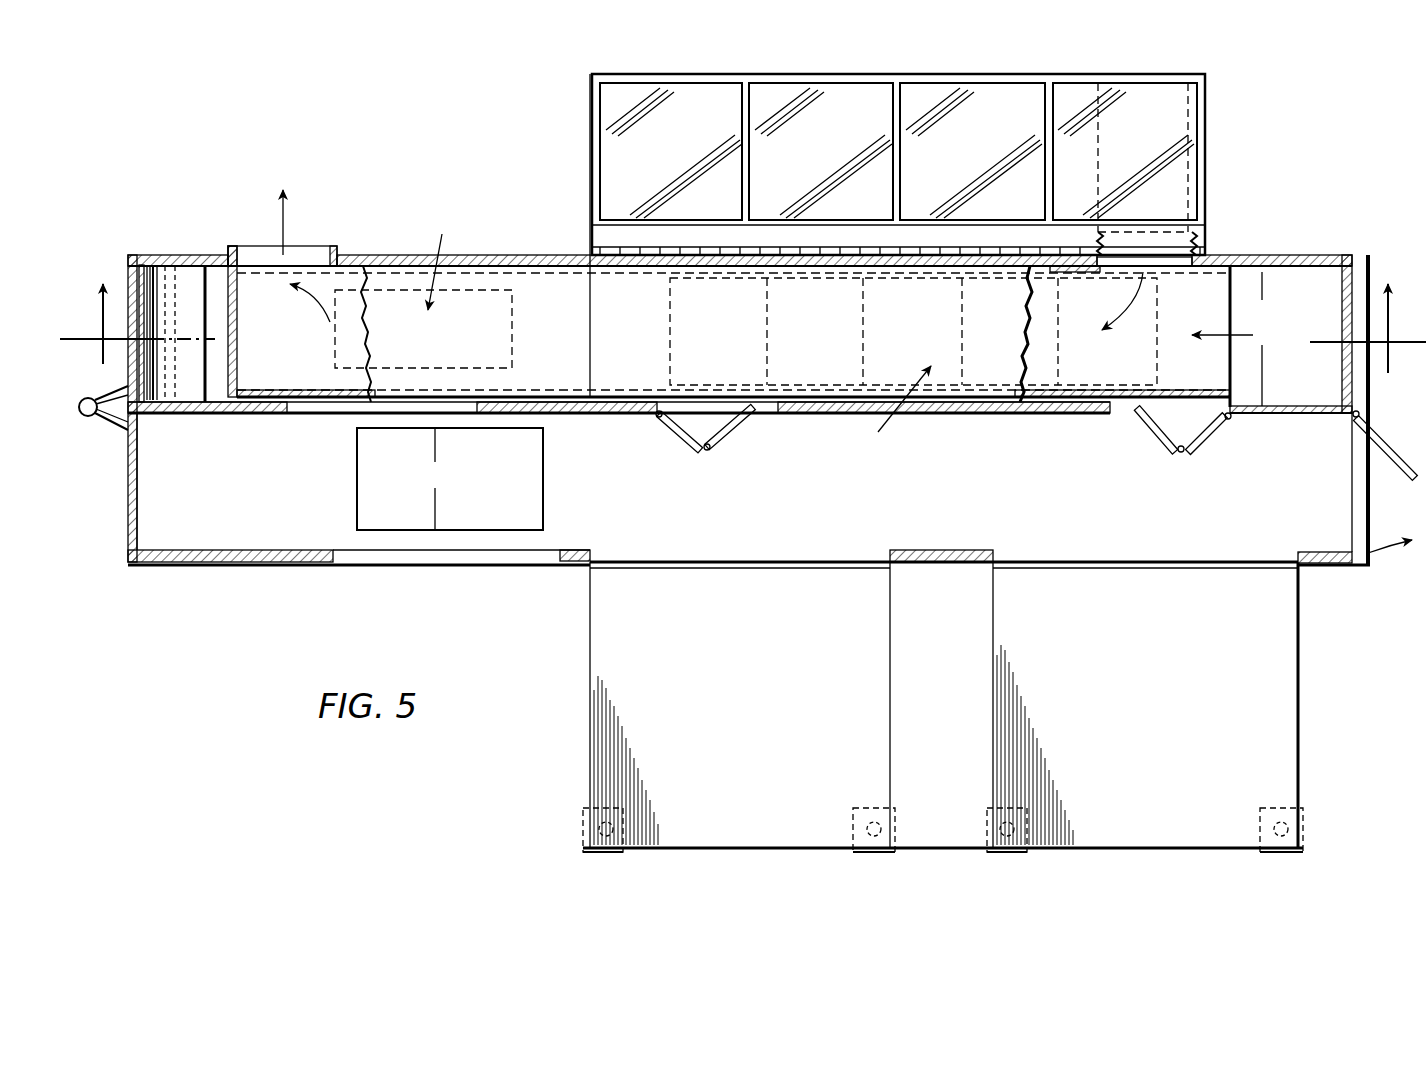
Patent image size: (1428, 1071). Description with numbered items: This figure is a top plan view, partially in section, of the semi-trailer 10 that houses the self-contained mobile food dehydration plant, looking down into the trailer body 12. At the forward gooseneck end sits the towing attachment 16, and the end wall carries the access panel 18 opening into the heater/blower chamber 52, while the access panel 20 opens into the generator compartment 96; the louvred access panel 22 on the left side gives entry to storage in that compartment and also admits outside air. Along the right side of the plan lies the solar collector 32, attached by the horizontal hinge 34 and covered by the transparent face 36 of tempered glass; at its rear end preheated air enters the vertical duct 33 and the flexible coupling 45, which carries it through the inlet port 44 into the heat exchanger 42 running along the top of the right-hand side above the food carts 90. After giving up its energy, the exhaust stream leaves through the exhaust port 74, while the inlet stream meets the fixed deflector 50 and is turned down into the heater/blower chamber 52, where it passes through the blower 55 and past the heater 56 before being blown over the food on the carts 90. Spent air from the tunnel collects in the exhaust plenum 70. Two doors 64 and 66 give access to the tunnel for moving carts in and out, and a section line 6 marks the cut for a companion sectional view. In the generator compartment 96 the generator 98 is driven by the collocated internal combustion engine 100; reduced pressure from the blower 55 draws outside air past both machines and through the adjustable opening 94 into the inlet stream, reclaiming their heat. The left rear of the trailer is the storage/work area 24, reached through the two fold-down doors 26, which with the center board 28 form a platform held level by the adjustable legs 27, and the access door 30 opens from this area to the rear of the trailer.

The section line 6- 6 is at (743, 331).
The semi-trailer 10 is at (306, 574).
The trailer body 12 is at (175, 255).
The towing attachment 16 is at (92, 418).
The access panel 18 is at (128, 262).
The access panel 20 is at (128, 521).
The access panel 22 is at (425, 562).
The storage/work area 24 is at (733, 365).
The fold-down doors 26 is at (590, 648).
The adjustable legs 27 is at (608, 850).
The center board 28 is at (893, 648).
The access door 30 is at (1395, 470).
The solar collector 32 is at (702, 72).
The vertical duct 33 is at (1175, 142).
The horizontal hinge 34 is at (876, 246).
The transparent face 36 is at (946, 95).
The heat exchanger 42 is at (941, 365).
The inlet port 44 is at (1170, 268).
The flexible coupling 45 is at (1200, 238).
The fixed deflector 50 is at (146, 322).
The heater/blower chamber 52 is at (217, 388).
The blower 55 is at (342, 348).
The heater 56 is at (366, 334).
The door 64 is at (738, 438).
The door 66 is at (1145, 426).
The exhaust plenum 70 is at (1310, 280).
The exhaust port 74 is at (258, 256).
The carts 90 is at (695, 347).
The adjustable opening 94 is at (322, 412).
The generator compartment 96 is at (208, 542).
The generator 98 is at (450, 479).
The internal combustion engine 100 is at (357, 517).